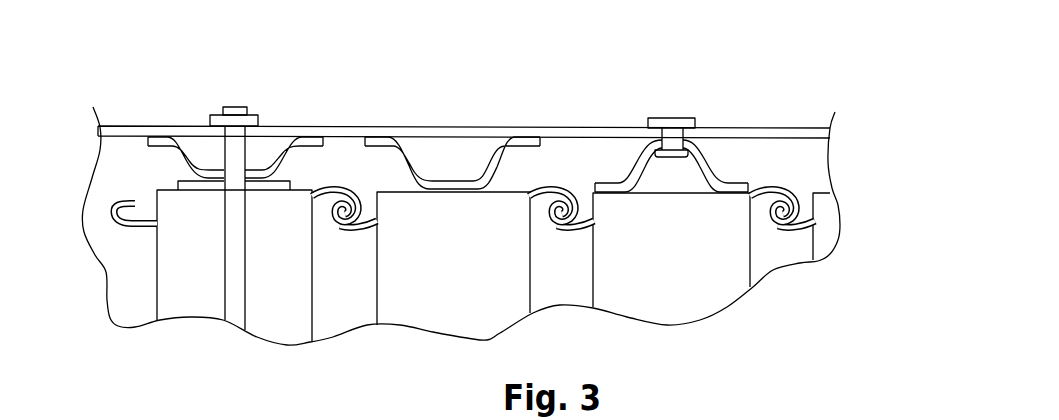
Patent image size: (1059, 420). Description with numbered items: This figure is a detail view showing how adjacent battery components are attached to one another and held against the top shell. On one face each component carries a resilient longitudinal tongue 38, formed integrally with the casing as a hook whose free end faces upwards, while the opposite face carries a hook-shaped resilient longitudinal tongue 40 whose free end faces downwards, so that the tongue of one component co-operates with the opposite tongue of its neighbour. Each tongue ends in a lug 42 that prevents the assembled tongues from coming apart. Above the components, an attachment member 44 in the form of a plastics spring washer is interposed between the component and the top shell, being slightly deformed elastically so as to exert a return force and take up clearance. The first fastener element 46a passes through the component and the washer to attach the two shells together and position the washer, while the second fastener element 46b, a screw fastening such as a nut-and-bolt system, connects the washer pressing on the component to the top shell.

The resilient longitudinal tongue 38 is at (332, 190).
The hook-shaped resilient longitudinal tongue 40 is at (353, 229).
The lug 42 is at (125, 197).
The attachment member 44 is at (283, 157).
The first fastener element 46a is at (237, 133).
The second fastener element 46b is at (668, 122).